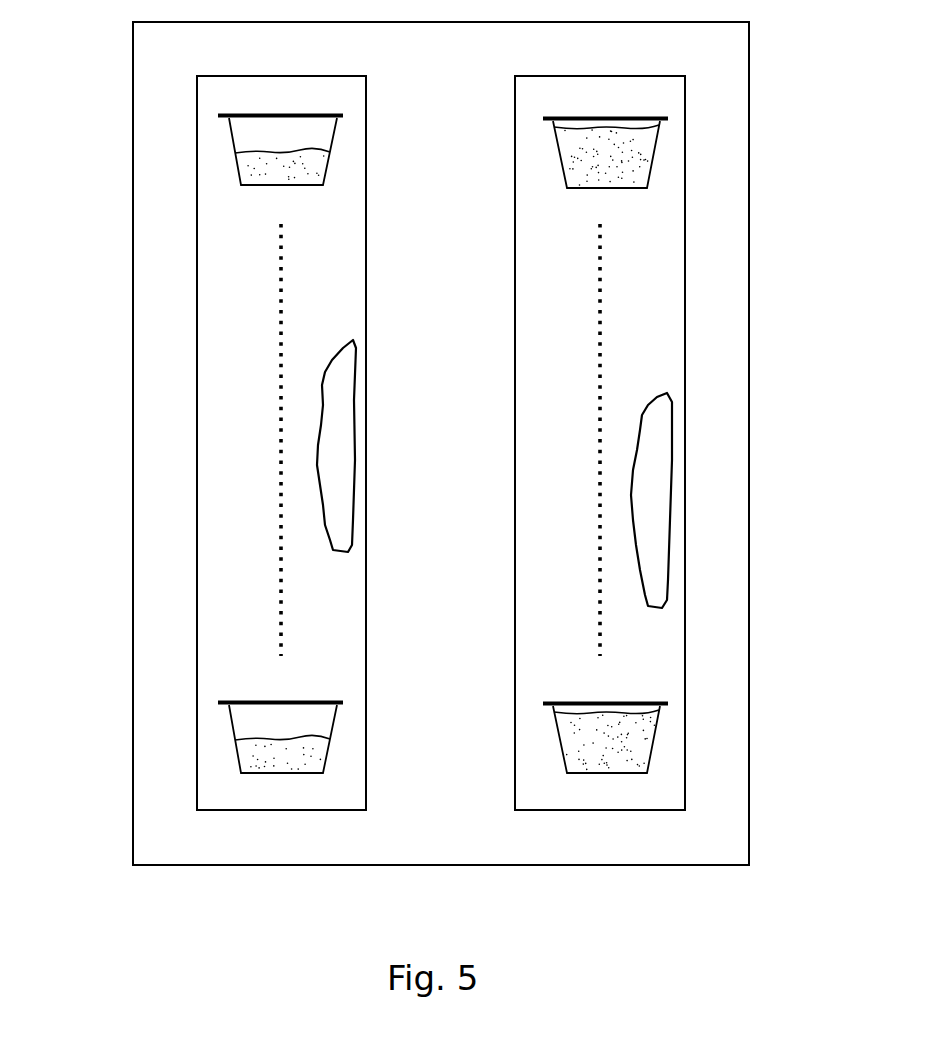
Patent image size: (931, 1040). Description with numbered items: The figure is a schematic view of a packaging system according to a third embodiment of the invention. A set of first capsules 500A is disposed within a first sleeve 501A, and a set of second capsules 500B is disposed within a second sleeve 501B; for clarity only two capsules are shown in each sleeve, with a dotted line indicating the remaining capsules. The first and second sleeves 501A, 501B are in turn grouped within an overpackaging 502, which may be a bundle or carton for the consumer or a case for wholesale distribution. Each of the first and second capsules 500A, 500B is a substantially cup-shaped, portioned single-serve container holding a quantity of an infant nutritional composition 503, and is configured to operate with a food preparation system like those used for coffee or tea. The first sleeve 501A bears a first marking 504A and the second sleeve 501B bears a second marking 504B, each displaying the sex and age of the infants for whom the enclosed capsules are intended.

The first capsules 500A is at (653, 152).
The second capsules 500B is at (230, 136).
The first sleeve 501A is at (606, 810).
The second sleeve 501B is at (330, 810).
The overpackaging 502 is at (133, 826).
The infant nutritional composition 503 is at (262, 182).
The first marking 504A is at (672, 412).
The second marking 504B is at (355, 373).